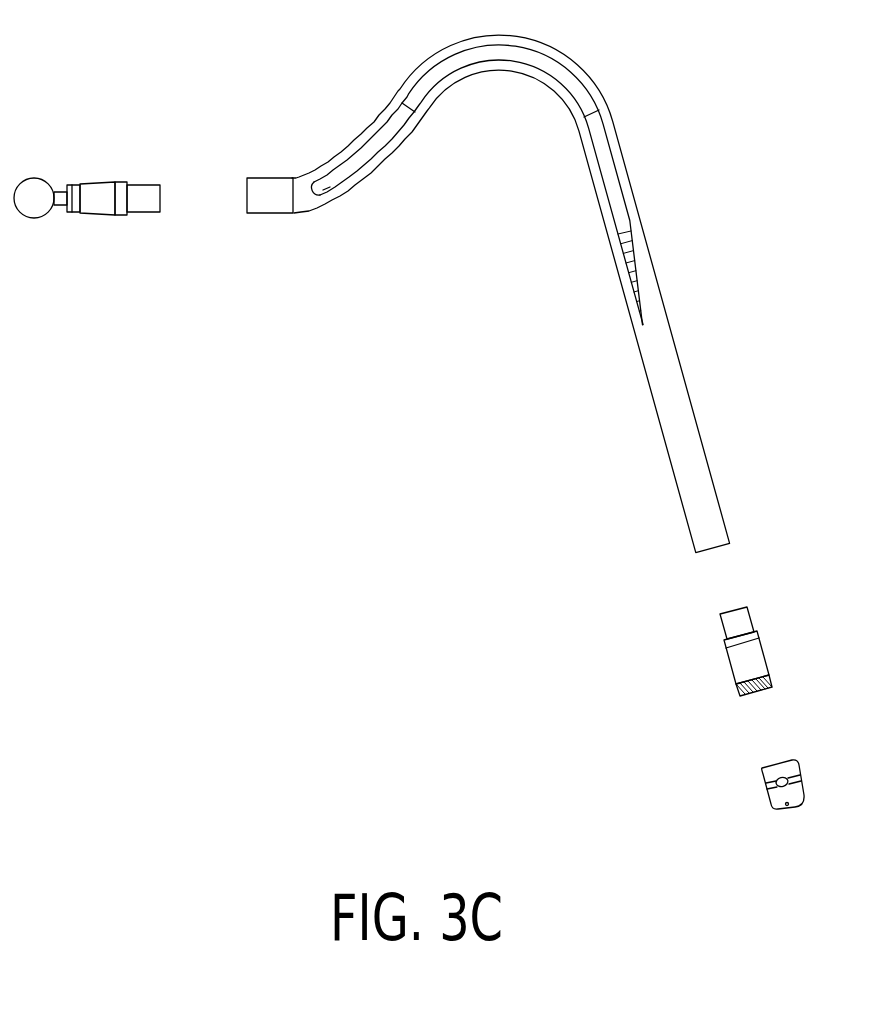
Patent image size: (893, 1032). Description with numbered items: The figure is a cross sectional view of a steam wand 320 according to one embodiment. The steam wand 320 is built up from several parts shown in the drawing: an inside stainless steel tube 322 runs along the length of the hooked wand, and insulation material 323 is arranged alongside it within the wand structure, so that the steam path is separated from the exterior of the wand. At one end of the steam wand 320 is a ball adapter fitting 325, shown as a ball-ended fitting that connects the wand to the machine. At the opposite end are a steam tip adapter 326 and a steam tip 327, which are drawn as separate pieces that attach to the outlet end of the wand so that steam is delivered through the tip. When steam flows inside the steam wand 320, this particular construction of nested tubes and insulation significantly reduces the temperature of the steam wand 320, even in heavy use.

The steam wand 320 is at (382, 60).
The inside stainless steel tube 322 is at (403, 155).
The insulation material 323 is at (382, 180).
The ball adapter fitting 325 is at (112, 220).
The steam tip adapter 326 is at (358, 208).
The steam tip 327 is at (762, 780).